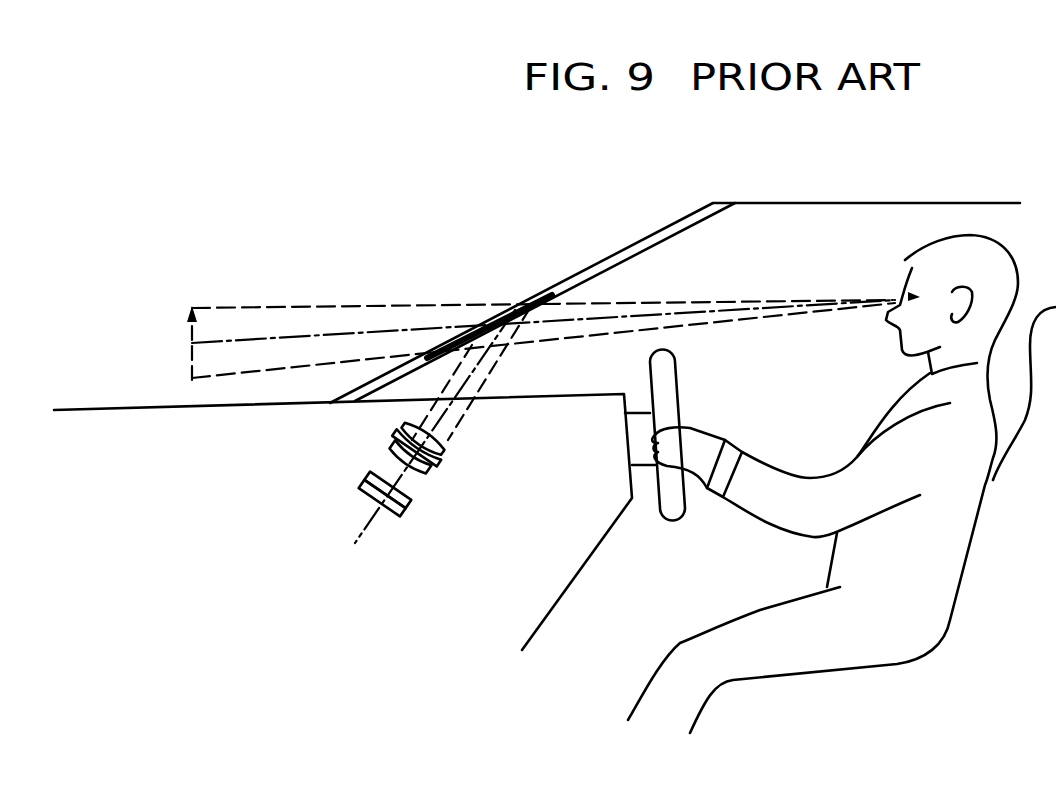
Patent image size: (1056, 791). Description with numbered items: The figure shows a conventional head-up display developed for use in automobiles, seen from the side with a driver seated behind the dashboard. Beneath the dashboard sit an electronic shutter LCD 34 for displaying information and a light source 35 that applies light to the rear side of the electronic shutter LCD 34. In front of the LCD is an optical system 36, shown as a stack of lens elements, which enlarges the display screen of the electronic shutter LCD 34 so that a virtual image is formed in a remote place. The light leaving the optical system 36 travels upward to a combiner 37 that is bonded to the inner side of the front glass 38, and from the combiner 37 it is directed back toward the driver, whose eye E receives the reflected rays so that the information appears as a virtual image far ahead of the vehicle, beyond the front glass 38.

The electronic shutter LCD 34 is at (405, 503).
The light source 35 is at (398, 508).
The optical system 36 is at (462, 463).
The combiner 37 is at (517, 307).
The front glass 38 is at (642, 243).
The driver's eye E is at (892, 276).